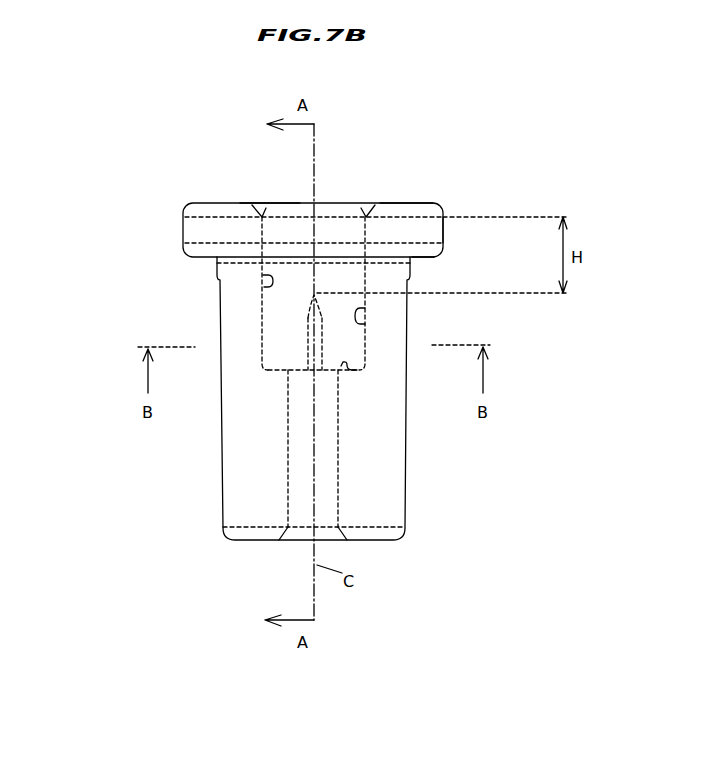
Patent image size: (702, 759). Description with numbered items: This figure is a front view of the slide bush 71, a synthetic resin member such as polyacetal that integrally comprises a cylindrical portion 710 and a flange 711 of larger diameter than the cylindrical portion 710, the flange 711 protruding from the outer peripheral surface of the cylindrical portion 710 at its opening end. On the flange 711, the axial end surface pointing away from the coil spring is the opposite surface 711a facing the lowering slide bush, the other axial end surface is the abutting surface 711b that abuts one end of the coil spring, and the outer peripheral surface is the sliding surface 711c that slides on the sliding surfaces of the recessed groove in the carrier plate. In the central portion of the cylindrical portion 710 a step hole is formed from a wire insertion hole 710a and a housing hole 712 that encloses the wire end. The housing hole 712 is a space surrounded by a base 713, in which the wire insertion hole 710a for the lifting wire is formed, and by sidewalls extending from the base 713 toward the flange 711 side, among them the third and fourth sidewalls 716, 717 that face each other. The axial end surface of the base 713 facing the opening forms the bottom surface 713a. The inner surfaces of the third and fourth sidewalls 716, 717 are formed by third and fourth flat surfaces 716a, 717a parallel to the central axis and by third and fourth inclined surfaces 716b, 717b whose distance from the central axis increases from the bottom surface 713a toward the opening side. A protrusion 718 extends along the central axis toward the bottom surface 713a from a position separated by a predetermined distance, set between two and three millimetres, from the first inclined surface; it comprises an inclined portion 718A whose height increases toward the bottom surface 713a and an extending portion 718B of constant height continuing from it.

The slide bush 71 is at (83, 163).
The flange 711 is at (165, 210).
The cylindrical portion 710 is at (200, 283).
The housing hole 712 is at (280, 200).
The third inclined surface 716b is at (260, 203).
The fourth inclined surface 717b is at (368, 203).
The opposite surface 711a is at (430, 203).
The sliding surface 711c is at (443, 233).
The abutting surface 711b is at (438, 254).
The third sidewall 716 is at (257, 313).
The fourth sidewall 717 is at (375, 325).
The third flat surface 716a is at (262, 283).
The fourth flat surface 717a is at (364, 311).
The bottom surface 713a is at (363, 370).
The base 713 is at (363, 408).
The protrusion 718 is at (117, 438).
The inclined portion 718A is at (312, 300).
The extending portion 718B is at (312, 354).
The wire insertion hole 710a is at (303, 518).